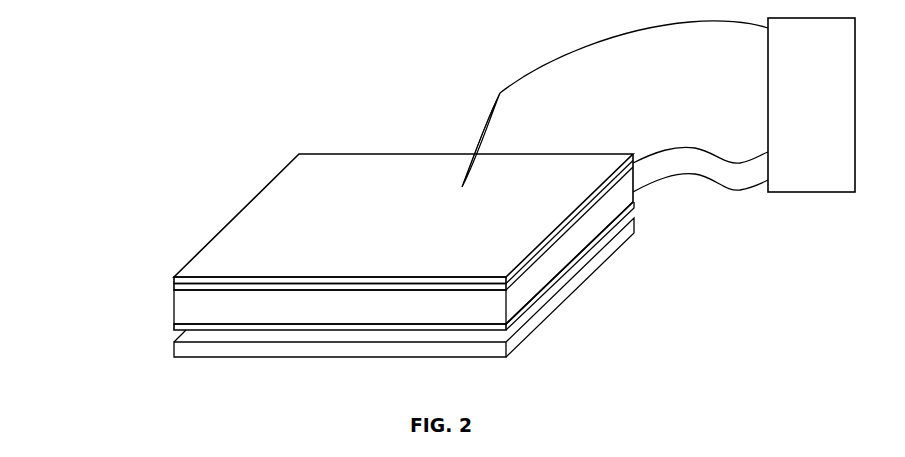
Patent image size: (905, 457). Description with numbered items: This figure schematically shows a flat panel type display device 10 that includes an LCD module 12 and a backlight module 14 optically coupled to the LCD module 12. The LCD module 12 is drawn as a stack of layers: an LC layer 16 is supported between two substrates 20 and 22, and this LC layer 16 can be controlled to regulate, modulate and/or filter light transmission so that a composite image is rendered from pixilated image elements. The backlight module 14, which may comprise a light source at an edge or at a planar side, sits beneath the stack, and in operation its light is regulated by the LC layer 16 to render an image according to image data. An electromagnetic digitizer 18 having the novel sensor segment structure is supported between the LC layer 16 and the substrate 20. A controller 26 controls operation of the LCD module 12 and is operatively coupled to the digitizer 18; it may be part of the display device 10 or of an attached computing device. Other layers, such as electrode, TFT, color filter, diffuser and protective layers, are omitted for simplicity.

The display device 10 is at (285, 147).
The LCD module 12 is at (328, 254).
The backlight module 14 is at (174, 351).
The LC layer 16 is at (185, 312).
The electromagnetic digitizer 18 is at (174, 282).
The substrate 20 is at (174, 278).
The substrate 22 is at (73, 250).
The controller 26 is at (799, 114).